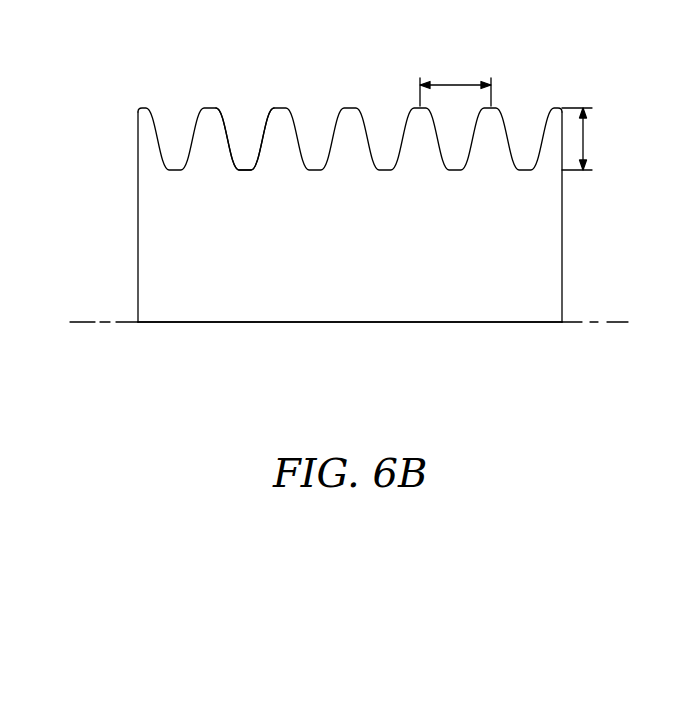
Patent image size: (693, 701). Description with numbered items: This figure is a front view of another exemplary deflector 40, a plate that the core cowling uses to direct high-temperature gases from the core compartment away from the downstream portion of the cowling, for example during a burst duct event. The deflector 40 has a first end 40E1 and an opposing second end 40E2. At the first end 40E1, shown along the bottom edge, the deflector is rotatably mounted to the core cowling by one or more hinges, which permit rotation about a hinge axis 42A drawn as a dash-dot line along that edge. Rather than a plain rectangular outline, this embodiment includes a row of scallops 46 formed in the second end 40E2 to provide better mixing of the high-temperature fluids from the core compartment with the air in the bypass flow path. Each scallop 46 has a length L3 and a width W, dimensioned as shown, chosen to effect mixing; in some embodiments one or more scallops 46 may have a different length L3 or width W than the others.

The deflector 40 is at (378, 251).
The first end 40E1 is at (497, 332).
The second end 40E2 is at (343, 101).
The hinge axis 42A is at (620, 323).
The scallops 46 is at (249, 126).
The width W is at (455, 82).
The length L3 is at (585, 137).